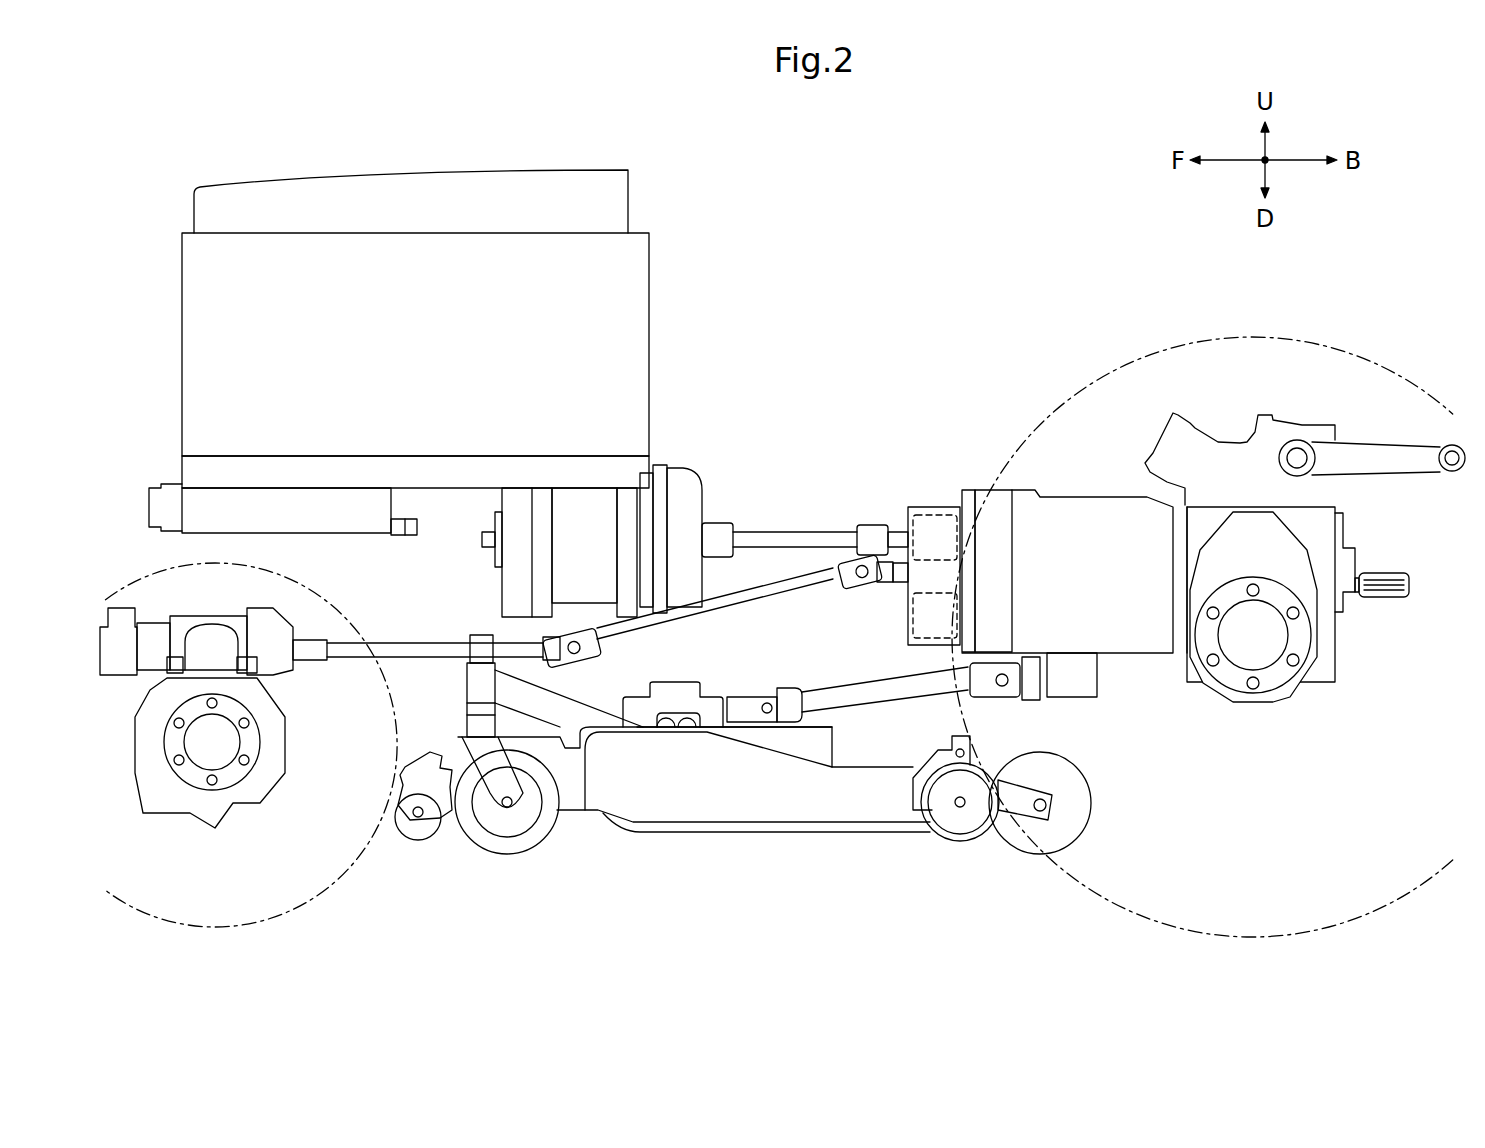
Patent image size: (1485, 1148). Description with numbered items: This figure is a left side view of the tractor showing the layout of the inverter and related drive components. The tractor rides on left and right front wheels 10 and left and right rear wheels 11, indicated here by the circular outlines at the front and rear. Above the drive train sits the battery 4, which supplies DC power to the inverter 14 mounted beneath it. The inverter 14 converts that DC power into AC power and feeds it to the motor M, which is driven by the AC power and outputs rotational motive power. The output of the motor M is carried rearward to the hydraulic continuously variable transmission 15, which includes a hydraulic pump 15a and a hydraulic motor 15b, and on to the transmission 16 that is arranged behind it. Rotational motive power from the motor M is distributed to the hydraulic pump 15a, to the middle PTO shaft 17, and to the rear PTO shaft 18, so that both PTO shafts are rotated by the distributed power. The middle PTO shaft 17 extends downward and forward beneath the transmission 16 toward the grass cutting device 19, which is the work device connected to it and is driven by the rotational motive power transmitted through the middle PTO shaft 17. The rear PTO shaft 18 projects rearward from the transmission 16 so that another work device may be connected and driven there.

The battery 4 is at (397, 183).
The inverter 14 is at (308, 525).
The motor M is at (587, 510).
The hydraulic continuously variable transmission 15 is at (913, 507).
The hydraulic pump 15a is at (942, 512).
The hydraulic motor 15b is at (903, 618).
The transmission 16 is at (1150, 637).
The middle PTO shaft 17 is at (1047, 700).
The rear PTO shaft 18 is at (1390, 600).
The front wheels 10 is at (303, 903).
The rear wheels 11 is at (1100, 897).
The grass cutting device 19 is at (713, 802).